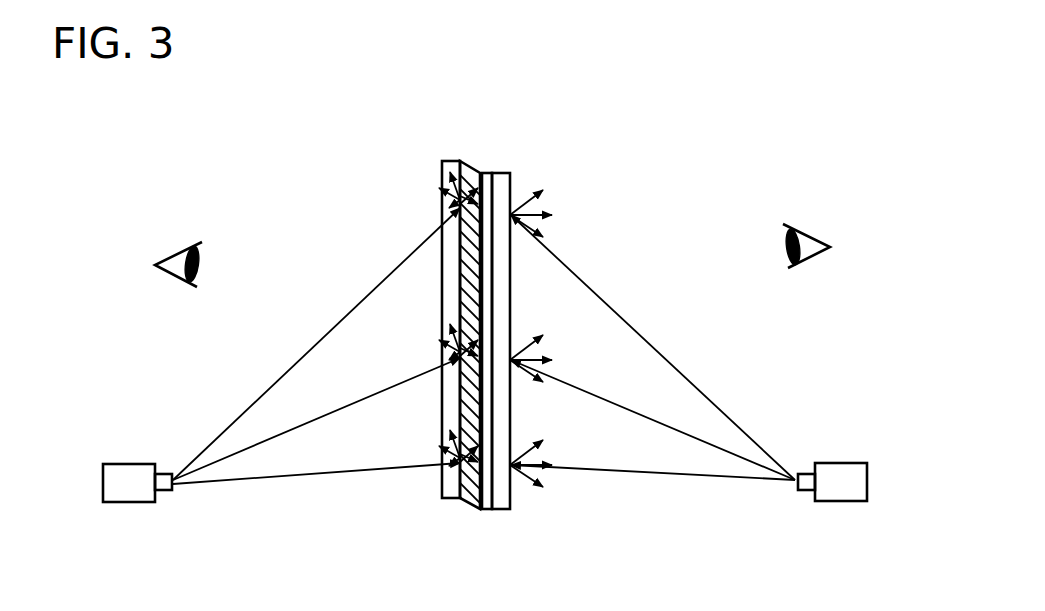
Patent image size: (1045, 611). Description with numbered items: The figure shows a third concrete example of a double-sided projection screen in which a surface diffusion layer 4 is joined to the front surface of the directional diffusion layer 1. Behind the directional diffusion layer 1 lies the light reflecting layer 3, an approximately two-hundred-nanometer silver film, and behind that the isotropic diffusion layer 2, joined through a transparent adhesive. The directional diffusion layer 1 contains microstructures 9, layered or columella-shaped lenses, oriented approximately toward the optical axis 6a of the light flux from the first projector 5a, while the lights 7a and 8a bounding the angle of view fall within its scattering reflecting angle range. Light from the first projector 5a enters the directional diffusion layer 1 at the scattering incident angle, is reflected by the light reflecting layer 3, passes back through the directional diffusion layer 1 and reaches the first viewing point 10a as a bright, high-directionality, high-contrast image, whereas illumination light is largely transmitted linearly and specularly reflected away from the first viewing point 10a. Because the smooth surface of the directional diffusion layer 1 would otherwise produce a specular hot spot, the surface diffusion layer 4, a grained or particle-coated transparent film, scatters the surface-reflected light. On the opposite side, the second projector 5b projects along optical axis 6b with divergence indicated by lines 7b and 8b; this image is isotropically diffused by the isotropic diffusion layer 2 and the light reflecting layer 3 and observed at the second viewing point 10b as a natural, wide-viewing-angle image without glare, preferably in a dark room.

The directional diffusion layer 1 is at (473, 165).
The isotropic diffusion layer 2 is at (512, 178).
The light reflecting layer 3 is at (487, 172).
The surface diffusion layer 4 is at (456, 160).
The first projector 5a is at (118, 463).
The second projector 5b is at (838, 463).
The optical axis 6a is at (283, 435).
The optical axis 6b is at (595, 395).
The light 7a is at (365, 472).
The line 7b is at (600, 472).
The light 8a is at (280, 379).
The line 8b is at (638, 325).
The microstructures 9 is at (468, 263).
The first viewing point 10a is at (187, 250).
The second viewing point 10b is at (797, 230).